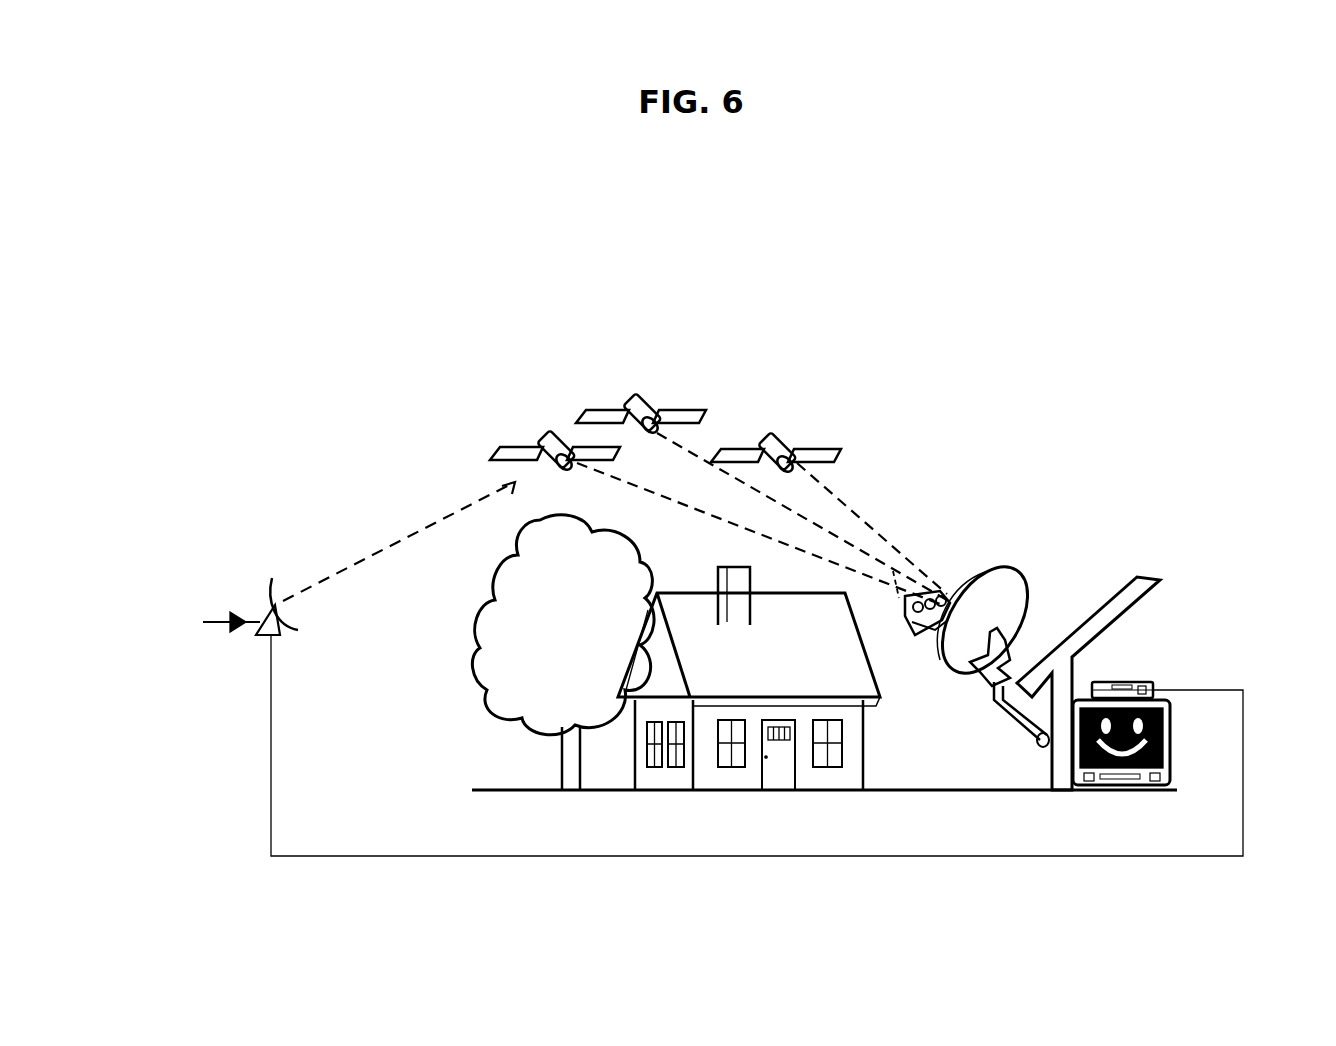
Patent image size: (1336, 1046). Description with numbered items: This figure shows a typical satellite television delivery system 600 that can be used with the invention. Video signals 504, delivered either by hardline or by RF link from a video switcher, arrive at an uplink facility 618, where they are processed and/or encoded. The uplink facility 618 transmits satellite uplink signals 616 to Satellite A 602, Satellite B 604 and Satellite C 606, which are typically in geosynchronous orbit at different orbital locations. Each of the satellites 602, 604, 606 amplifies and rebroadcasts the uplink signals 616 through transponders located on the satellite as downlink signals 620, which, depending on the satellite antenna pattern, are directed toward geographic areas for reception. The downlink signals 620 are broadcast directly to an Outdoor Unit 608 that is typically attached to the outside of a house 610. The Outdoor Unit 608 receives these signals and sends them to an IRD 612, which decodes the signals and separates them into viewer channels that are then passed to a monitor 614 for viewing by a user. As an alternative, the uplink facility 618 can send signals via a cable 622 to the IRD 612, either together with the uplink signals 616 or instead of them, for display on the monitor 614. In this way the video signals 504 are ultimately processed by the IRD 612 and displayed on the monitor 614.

The system 600 is at (827, 220).
The Satellite A 602 is at (525, 433).
The Satellite B 604 is at (787, 424).
The Satellite C 606 is at (701, 398).
The Outdoor Unit 608 is at (1000, 563).
The house 610 is at (1105, 590).
The IRD 612 is at (1123, 680).
The monitor 614 is at (1173, 731).
The satellite uplink signals 616 is at (353, 553).
The uplink facility 618 is at (264, 614).
The downlink signals 620 is at (873, 523).
The cable 622 is at (1223, 688).
The signals 504 is at (217, 622).